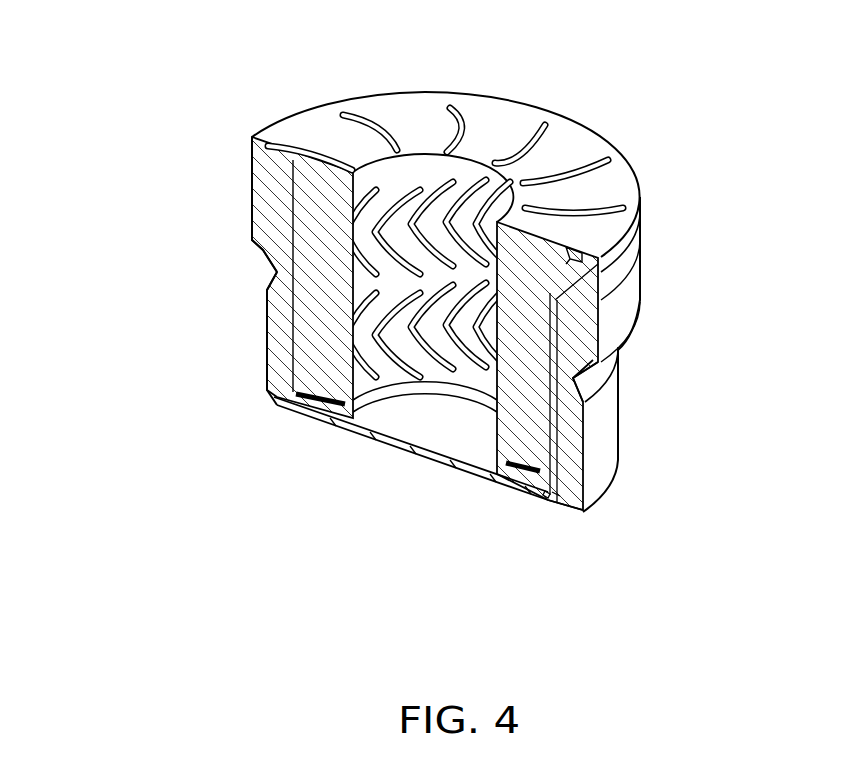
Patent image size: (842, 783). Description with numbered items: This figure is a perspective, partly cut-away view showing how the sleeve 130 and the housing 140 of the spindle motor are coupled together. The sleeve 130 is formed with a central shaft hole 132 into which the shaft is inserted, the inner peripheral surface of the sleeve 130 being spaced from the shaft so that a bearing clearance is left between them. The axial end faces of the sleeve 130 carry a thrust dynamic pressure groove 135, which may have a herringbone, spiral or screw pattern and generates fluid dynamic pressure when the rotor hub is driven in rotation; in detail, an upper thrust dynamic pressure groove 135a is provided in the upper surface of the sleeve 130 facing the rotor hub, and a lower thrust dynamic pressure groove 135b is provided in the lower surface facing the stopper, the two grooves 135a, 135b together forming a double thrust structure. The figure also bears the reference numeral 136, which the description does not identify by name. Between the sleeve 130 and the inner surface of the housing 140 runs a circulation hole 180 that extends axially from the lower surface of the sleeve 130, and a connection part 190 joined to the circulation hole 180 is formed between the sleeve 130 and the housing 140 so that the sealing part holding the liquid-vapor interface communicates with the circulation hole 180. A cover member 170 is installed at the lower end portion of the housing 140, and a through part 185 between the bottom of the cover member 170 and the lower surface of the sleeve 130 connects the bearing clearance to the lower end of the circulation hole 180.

The sleeve 130 is at (599, 122).
The shaft hole 132 is at (418, 192).
The thrust grooves 136 is at (511, 113).
The thrust dynamic pressure groove 135 is at (115, 190).
The upper thrust dynamic pressure groove 135a is at (257, 163).
The lower thrust dynamic pressure groove 135b is at (307, 392).
The housing 140 is at (604, 421).
The cover member 170 is at (520, 490).
The circulation hole 180 is at (575, 384).
The through part 185 is at (548, 498).
The connection part 190 is at (583, 290).